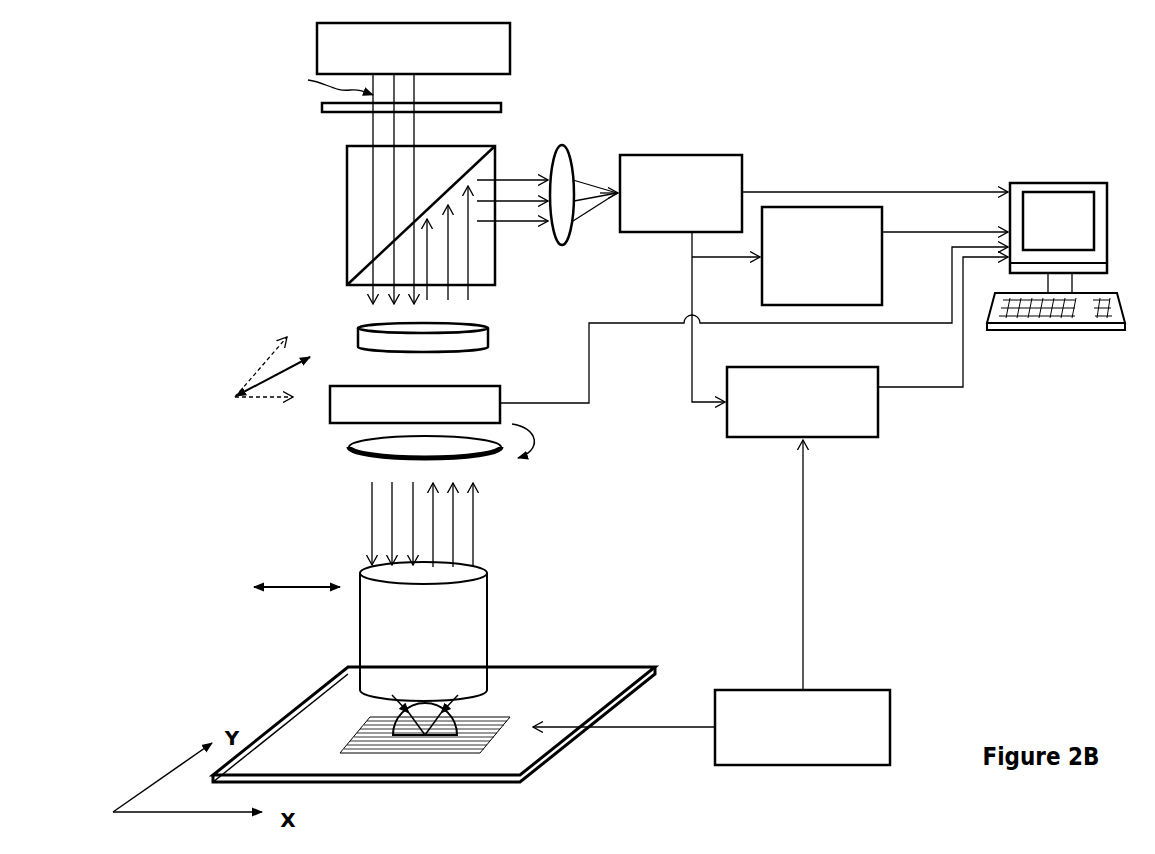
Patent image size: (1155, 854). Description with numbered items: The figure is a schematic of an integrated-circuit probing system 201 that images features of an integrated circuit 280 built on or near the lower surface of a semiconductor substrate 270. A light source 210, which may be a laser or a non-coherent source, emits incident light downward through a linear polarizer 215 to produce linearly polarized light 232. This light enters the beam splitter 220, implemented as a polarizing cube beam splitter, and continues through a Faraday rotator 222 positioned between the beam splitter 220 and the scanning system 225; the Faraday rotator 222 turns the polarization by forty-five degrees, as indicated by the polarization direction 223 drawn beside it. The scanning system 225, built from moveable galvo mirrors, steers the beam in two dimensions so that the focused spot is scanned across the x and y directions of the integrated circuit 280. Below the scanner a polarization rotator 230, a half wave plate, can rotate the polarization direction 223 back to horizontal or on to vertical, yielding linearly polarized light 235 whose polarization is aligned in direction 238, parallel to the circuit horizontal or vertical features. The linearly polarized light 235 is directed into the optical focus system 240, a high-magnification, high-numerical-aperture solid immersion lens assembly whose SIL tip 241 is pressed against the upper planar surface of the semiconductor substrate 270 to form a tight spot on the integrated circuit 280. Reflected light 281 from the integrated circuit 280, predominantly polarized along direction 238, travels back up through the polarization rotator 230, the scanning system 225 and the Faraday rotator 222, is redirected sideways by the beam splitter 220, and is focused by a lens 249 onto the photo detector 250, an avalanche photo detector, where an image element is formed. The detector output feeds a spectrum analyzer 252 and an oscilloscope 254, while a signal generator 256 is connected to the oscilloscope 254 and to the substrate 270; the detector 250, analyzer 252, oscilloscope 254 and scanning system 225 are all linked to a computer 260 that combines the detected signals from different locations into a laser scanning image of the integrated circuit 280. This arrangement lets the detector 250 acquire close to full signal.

The integrated-circuit probing system 201 is at (940, 85).
The light source 210 is at (413, 48).
The linear polarizer 215 is at (497, 103).
The beam splitter 220 is at (347, 225).
The Faraday rotator 222 is at (355, 331).
The polarization direction 223 is at (270, 376).
The scanning system 225 is at (492, 390).
The polarization rotator 230 is at (347, 444).
The linearly polarized light 232 is at (373, 135).
The linearly polarized light 235 is at (372, 526).
The polarization direction 238 is at (313, 583).
The optical focus system 240 is at (488, 606).
The SIL tip 241 is at (377, 698).
The lens 249 is at (565, 167).
The photo detector 250 is at (814, 278).
The spectrum analyzer 252 is at (885, 256).
The oscilloscope 254 is at (867, 347).
The signal generator 256 is at (711, 602).
The computer 260 is at (1060, 183).
The semiconductor substrate 270 is at (590, 670).
The integrated circuit 280 is at (490, 745).
The reflected light 281 is at (476, 525).